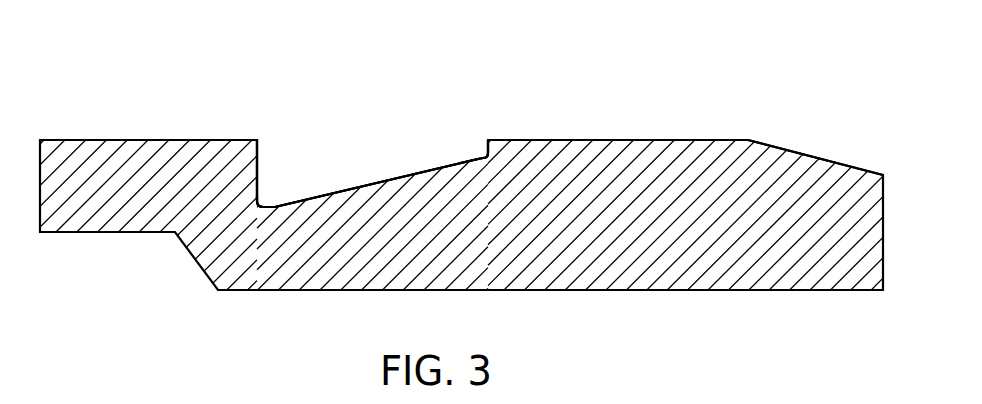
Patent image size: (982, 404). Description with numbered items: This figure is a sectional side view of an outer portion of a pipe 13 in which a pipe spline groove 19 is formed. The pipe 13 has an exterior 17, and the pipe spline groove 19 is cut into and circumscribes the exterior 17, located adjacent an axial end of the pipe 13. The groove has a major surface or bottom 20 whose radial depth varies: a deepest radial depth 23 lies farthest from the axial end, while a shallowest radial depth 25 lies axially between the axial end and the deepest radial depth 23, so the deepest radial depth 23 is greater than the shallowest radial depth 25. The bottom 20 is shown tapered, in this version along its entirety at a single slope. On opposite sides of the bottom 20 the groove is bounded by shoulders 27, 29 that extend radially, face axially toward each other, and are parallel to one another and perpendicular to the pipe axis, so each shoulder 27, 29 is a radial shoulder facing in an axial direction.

The pipe 13 is at (80, 155).
The exterior 17 is at (589, 128).
The pipe spline groove 19 is at (334, 128).
The bottom 20 is at (380, 170).
The deepest radial depth 23 is at (268, 207).
The shallowest radial depth 25 is at (472, 163).
The shoulder 27 is at (259, 162).
The shoulder 29 is at (487, 153).